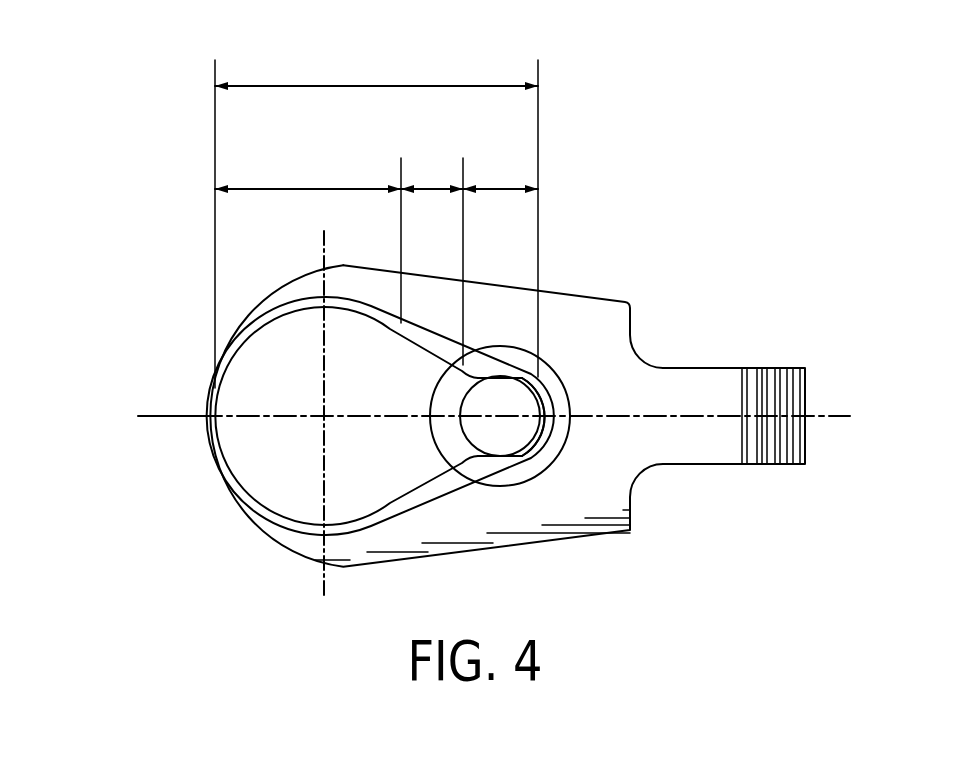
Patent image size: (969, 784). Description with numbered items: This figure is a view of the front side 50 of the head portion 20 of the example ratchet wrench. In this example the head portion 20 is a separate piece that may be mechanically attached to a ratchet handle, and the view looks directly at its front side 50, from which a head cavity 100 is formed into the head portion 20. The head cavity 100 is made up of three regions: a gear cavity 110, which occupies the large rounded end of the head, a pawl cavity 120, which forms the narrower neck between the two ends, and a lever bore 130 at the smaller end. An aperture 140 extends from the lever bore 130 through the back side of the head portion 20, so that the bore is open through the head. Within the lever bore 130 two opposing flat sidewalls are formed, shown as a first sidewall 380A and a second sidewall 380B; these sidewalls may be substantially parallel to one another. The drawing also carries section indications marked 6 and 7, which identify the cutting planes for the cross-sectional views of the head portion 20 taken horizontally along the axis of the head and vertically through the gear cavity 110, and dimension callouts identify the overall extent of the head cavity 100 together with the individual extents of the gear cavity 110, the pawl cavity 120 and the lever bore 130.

The head portion 20 is at (125, 166).
The front side 50 is at (197, 367).
The head cavity 100 is at (363, 85).
The gear cavity 110 is at (295, 188).
The pawl cavity 120 is at (438, 185).
The lever bore 130 is at (495, 188).
The aperture 140 is at (517, 432).
The first sidewall 380A is at (504, 392).
The second sidewall 380B is at (491, 440).
The section line 6- 6 is at (138, 416).
The section line 7- 7 is at (324, 231).